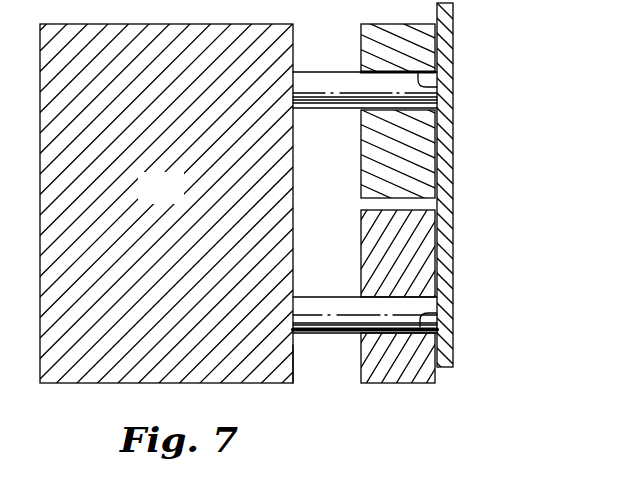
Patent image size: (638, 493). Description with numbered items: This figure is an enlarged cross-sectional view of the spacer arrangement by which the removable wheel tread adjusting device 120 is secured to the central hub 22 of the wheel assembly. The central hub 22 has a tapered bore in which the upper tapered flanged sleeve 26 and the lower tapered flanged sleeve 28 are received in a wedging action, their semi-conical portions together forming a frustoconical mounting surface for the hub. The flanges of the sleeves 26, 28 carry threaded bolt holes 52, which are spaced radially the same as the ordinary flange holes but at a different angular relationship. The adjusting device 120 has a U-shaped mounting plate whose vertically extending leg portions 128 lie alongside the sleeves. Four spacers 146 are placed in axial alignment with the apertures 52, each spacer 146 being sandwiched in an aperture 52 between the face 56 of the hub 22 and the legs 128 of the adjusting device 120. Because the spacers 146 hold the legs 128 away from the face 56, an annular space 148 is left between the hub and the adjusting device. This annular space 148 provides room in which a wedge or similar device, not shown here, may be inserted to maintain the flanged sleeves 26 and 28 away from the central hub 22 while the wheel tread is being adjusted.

The central hub 22 is at (172, 198).
The upper tapered flanged sleeve 26 is at (359, 154).
The lower tapered flanged sleeve 28 is at (359, 220).
The threaded bolt holes 52 is at (453, 84).
The face of the hub 56 is at (296, 362).
The removable wheel tread adjusting device 120 is at (490, 181).
The leg portions 128 is at (453, 237).
The spacers 146 is at (313, 72).
The annular space 148 is at (338, 365).